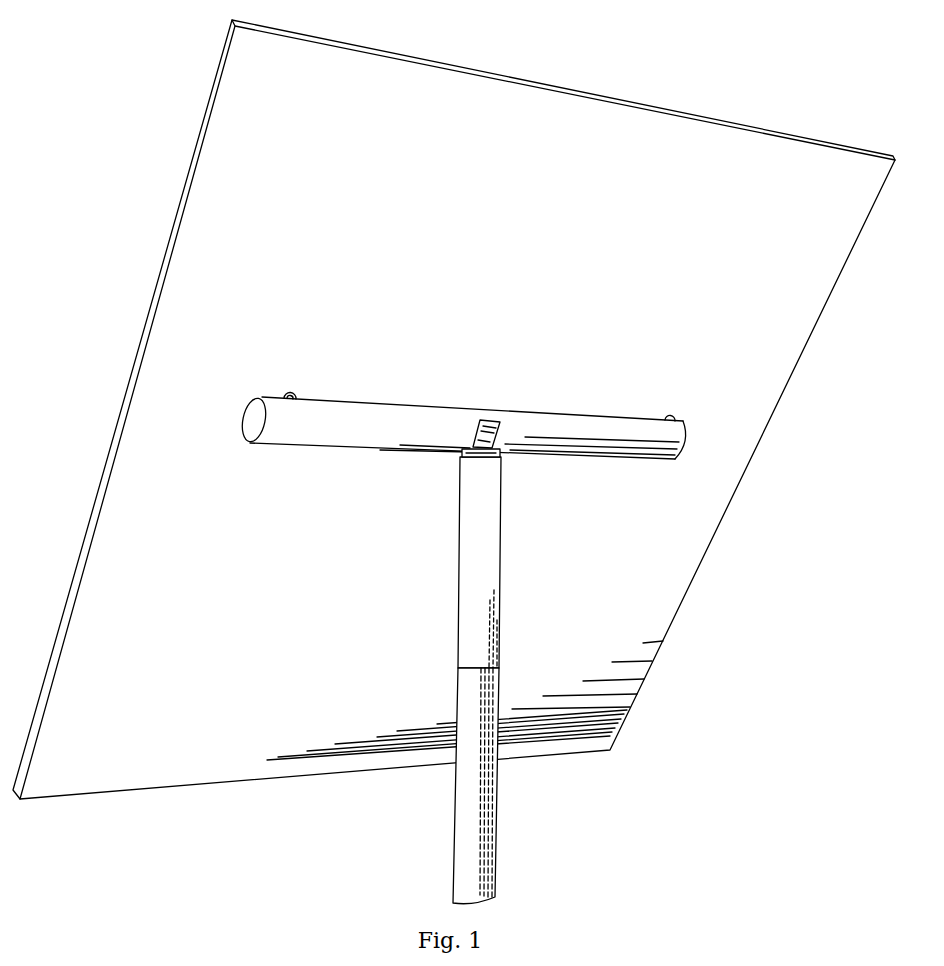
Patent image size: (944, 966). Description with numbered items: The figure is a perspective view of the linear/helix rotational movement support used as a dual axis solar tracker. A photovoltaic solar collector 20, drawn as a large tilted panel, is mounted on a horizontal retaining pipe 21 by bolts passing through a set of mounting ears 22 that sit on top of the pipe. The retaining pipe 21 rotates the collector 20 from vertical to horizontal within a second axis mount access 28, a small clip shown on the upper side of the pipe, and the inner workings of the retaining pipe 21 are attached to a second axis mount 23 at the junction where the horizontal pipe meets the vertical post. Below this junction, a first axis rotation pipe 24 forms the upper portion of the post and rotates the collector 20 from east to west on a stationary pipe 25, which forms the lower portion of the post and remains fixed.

The photovoltaic solar collector 20 is at (243, 92).
The retaining pipe 21 is at (317, 433).
The mounting ears 22 is at (287, 390).
The second axis mount 23 is at (478, 452).
The first axis rotation pipe 24 is at (468, 569).
The stationary pipe 25 is at (473, 805).
The second axis mount access 28 is at (494, 426).